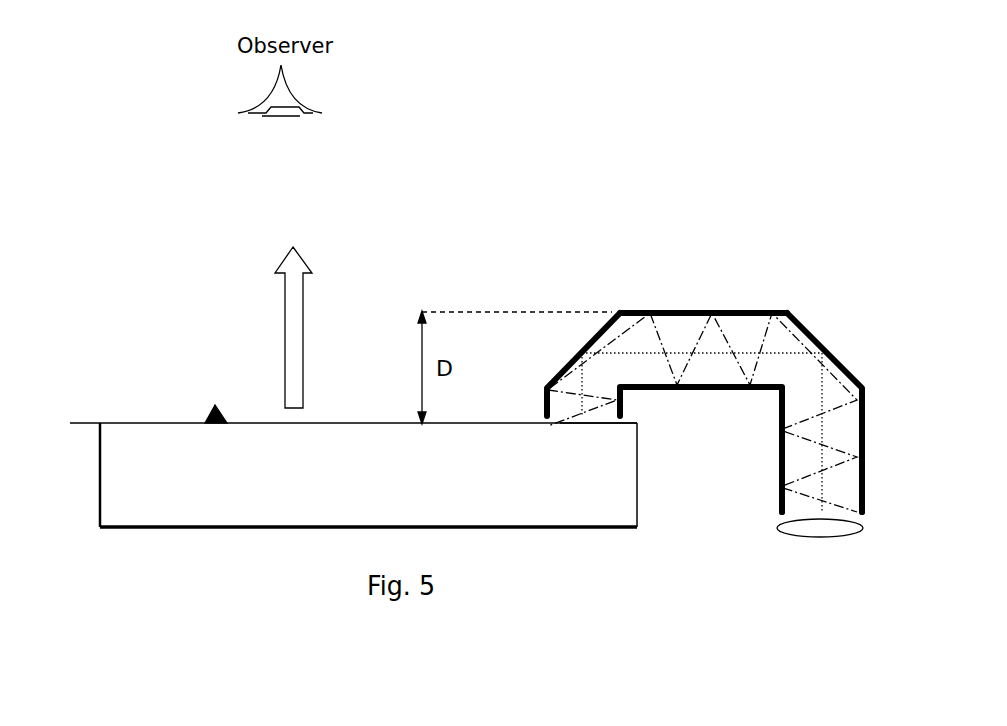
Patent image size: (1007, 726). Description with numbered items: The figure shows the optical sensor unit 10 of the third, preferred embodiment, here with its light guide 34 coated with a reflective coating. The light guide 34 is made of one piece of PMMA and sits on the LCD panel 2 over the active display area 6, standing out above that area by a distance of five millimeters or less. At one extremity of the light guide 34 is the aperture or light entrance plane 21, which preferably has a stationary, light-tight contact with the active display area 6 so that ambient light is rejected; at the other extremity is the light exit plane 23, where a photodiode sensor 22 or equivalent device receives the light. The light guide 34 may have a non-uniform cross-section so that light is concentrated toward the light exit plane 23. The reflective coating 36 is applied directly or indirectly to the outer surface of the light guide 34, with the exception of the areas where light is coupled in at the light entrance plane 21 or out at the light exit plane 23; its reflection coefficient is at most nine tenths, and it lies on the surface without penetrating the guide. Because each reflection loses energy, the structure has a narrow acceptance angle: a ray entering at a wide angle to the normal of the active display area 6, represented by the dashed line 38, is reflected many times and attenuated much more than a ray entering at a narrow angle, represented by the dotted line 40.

The LCD panel 2 is at (175, 498).
The active display area 6 is at (208, 409).
The optical sensor unit 10 is at (712, 398).
The light entrance plane 21 is at (598, 419).
The photodiode sensor 22 is at (822, 529).
The light exit plane 23 is at (778, 515).
The light guide 34 is at (682, 328).
The reflective coating 36 is at (715, 390).
The dashed line 38 is at (623, 335).
The dotted line 40 is at (788, 353).